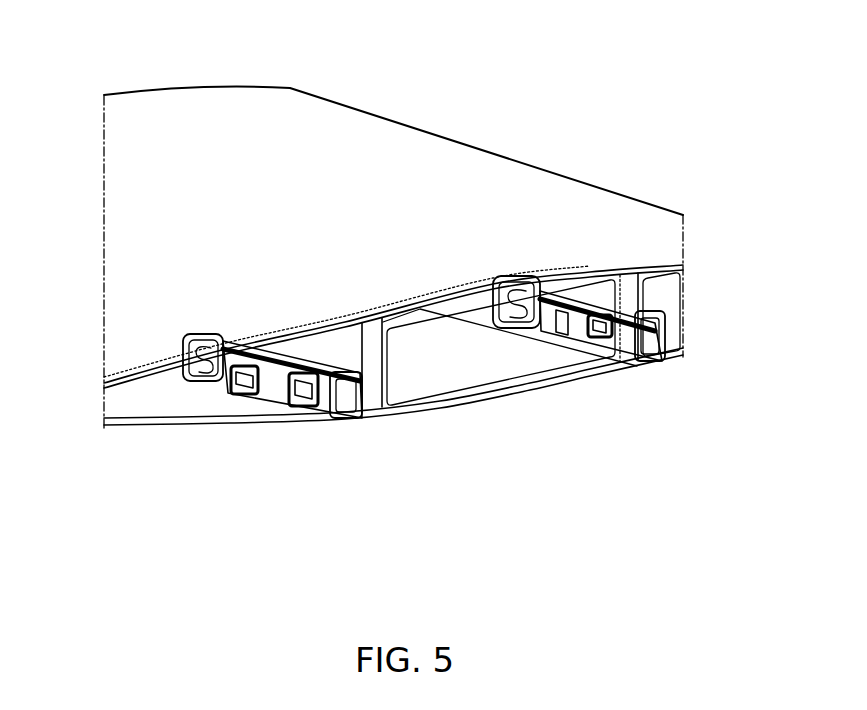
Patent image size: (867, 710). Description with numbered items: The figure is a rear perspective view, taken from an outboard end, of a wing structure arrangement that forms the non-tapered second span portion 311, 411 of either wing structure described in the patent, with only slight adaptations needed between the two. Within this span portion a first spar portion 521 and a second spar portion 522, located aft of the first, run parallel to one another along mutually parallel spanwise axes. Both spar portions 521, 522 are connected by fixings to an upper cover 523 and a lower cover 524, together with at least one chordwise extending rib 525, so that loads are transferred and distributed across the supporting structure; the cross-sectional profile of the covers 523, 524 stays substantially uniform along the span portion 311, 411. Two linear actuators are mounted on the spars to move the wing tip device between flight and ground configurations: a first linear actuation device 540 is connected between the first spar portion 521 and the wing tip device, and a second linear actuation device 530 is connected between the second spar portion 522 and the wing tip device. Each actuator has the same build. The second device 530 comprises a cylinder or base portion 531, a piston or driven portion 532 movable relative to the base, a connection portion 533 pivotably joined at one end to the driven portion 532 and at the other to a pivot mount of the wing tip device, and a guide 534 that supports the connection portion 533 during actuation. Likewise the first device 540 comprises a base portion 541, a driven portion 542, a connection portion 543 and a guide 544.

The non-tapered second span portion 311 is at (393, 257).
The non-tapered second span portion 411 is at (296, 184).
The first spar portion 521 is at (630, 278).
The second spar portion 522 is at (372, 417).
The upper cover 523 is at (510, 205).
The lower cover 524 is at (527, 402).
The chordwise extending rib 525 is at (175, 374).
The second linear actuation device 530 is at (202, 442).
The base portion 531 is at (215, 379).
The driven portion 532 is at (270, 380).
The connection portion 533 is at (318, 393).
The guide 534 is at (355, 418).
The first linear actuation device 540 is at (606, 316).
The base portion 541 is at (533, 322).
The driven portion 542 is at (574, 356).
The connection portion 543 is at (637, 367).
The guide 544 is at (662, 338).